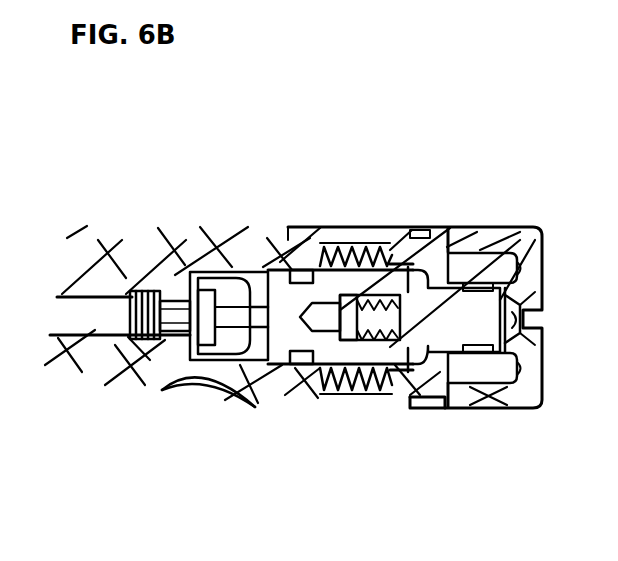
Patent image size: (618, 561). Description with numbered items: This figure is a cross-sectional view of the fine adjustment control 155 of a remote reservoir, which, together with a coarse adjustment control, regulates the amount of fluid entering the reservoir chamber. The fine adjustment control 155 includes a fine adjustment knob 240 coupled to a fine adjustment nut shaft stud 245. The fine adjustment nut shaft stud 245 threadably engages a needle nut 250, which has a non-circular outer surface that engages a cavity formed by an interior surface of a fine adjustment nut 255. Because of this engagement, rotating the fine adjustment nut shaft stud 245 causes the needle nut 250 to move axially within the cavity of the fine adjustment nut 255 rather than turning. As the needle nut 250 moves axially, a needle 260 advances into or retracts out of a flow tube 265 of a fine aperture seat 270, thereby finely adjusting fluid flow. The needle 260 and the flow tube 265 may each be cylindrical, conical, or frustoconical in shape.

The fine adjustment control 155 is at (245, 134).
The fine adjustment knob 240 is at (527, 245).
The fine adjustment nut shaft stud 245 is at (480, 325).
The needle nut 250 is at (372, 285).
The fine adjustment nut 255 is at (433, 408).
The needle 260 is at (278, 268).
The flow tube 265 is at (230, 280).
The fine aperture seat 270 is at (185, 388).